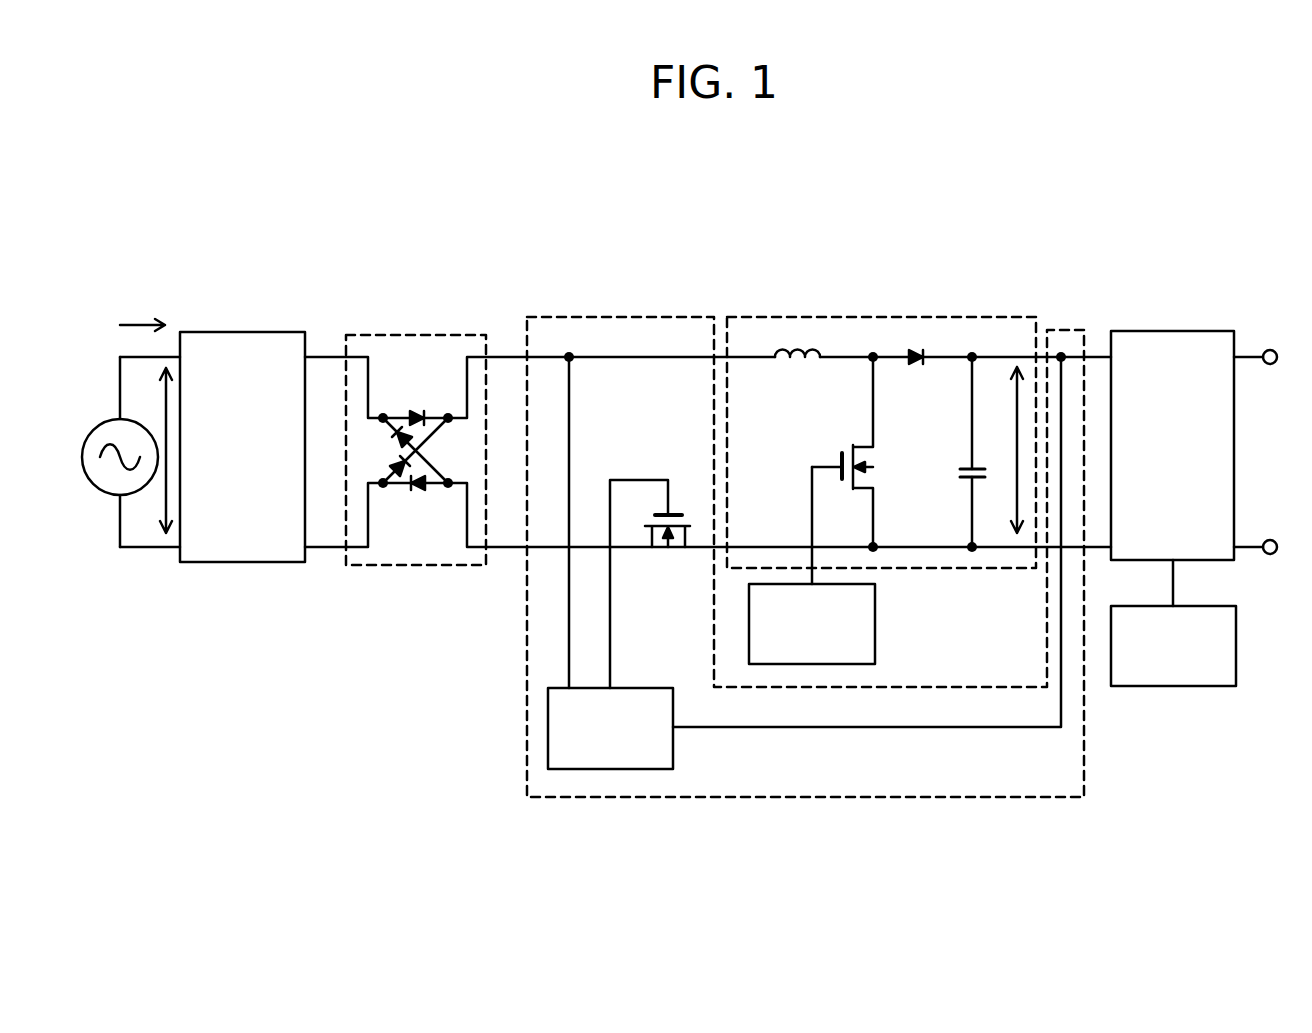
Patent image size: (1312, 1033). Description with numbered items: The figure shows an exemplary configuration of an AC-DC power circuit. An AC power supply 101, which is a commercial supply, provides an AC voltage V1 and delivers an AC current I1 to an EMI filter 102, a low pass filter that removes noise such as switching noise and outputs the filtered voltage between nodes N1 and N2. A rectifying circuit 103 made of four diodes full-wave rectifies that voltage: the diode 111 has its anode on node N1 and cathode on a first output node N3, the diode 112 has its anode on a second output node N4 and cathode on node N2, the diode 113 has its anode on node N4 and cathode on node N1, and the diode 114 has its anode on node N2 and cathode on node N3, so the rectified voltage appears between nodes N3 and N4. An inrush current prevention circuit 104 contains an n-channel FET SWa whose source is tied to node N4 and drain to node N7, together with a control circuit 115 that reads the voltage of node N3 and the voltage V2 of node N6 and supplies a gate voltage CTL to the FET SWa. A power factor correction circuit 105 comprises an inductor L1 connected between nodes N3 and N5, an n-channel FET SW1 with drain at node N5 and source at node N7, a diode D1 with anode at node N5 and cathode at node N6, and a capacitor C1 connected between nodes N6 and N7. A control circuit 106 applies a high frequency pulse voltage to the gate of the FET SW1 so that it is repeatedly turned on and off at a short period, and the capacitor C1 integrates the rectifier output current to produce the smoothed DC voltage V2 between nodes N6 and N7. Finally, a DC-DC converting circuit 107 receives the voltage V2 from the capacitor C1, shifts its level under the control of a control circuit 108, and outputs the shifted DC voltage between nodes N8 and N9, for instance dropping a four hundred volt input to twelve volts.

The AC power supply 101 is at (92, 487).
The electromagnetic interference (EMI) filter 102 is at (232, 563).
The rectifying circuit 103 is at (416, 473).
The inrush current prevention circuit 104 is at (805, 522).
The power factor correction (PFC) circuit 105 is at (881, 406).
The control circuit 106 is at (877, 605).
The DC-DC converting circuit 107 is at (1186, 330).
The control circuit 108 is at (1190, 688).
The diode 111 is at (420, 414).
The diode 112 is at (425, 488).
The diode 113 is at (400, 432).
The diode 114 is at (394, 488).
The control circuit 115 is at (675, 742).
The AC current I1 is at (132, 323).
The AC voltage V1 is at (164, 412).
The voltage V2 is at (1017, 430).
The node N1 is at (325, 355).
The node N2 is at (330, 549).
The first output node N3 is at (508, 355).
The second output node N4 is at (510, 549).
The node N5 is at (874, 355).
The node N6 is at (1097, 355).
The node N7 is at (1100, 549).
The node N8 is at (1270, 350).
The node N9 is at (1270, 555).
The inductor L1 is at (796, 362).
The diode D1 is at (914, 364).
The capacitor C1 is at (966, 467).
The n-channel field effect transistor (switch) SW1 is at (876, 472).
The n-channel field effect transistor SWa is at (675, 549).
The gate voltage CTL is at (633, 478).